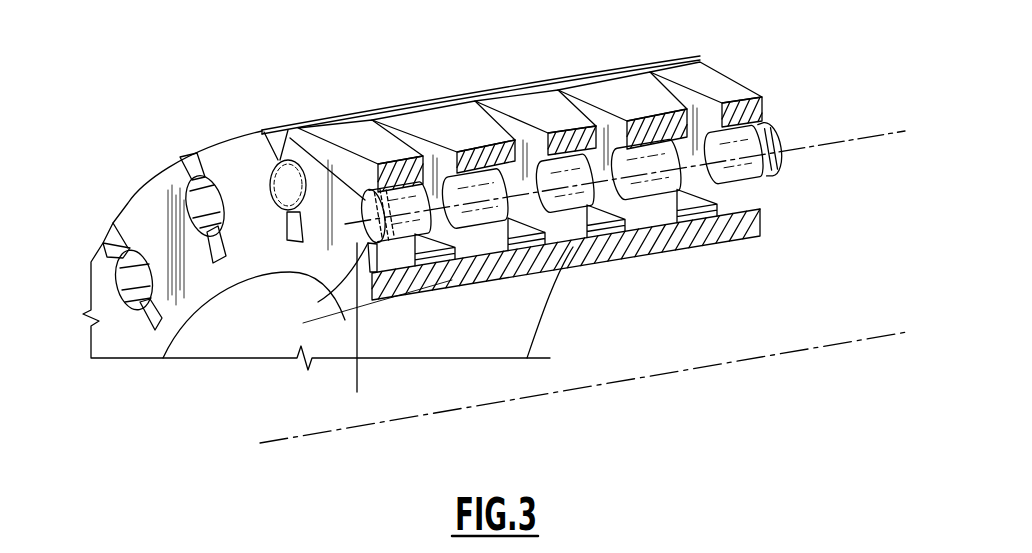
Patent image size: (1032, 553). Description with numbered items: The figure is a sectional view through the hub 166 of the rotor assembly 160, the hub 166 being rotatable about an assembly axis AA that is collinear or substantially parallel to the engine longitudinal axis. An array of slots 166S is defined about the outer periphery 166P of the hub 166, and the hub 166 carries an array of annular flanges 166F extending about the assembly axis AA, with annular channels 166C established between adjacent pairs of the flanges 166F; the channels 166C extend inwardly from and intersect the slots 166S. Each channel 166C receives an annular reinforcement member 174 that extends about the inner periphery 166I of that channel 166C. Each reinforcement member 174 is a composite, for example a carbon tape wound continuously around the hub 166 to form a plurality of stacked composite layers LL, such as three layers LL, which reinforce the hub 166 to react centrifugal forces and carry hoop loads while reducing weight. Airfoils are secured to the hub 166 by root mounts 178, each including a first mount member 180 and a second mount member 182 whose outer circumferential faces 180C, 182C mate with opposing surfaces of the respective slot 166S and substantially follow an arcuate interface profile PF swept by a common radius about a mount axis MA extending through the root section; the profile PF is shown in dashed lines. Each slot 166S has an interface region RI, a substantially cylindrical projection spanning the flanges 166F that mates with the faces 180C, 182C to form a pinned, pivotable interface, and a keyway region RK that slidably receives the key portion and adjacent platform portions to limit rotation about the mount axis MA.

The rotor assembly 160 is at (112, 136).
The hub 166 is at (217, 132).
The annular flanges 166F is at (360, 137).
The annular channels 166C is at (443, 157).
The outer periphery 166P is at (728, 86).
The slots 166S is at (360, 285).
The inner periphery 166I is at (604, 262).
The reinforcement member 174 is at (444, 268).
The root mount 178 is at (801, 122).
The first mount member 180 is at (782, 125).
The outer circumferential face 180C is at (352, 207).
The second mount member 182 is at (787, 181).
The outer circumferential face 182C is at (396, 282).
The interface region RI is at (280, 150).
The keyway region RK is at (357, 392).
The composite layer LL is at (433, 268).
The mount axis MA is at (800, 148).
The interface profile PF is at (790, 158).
The assembly axis AA is at (802, 350).